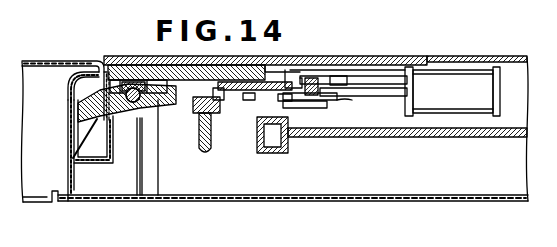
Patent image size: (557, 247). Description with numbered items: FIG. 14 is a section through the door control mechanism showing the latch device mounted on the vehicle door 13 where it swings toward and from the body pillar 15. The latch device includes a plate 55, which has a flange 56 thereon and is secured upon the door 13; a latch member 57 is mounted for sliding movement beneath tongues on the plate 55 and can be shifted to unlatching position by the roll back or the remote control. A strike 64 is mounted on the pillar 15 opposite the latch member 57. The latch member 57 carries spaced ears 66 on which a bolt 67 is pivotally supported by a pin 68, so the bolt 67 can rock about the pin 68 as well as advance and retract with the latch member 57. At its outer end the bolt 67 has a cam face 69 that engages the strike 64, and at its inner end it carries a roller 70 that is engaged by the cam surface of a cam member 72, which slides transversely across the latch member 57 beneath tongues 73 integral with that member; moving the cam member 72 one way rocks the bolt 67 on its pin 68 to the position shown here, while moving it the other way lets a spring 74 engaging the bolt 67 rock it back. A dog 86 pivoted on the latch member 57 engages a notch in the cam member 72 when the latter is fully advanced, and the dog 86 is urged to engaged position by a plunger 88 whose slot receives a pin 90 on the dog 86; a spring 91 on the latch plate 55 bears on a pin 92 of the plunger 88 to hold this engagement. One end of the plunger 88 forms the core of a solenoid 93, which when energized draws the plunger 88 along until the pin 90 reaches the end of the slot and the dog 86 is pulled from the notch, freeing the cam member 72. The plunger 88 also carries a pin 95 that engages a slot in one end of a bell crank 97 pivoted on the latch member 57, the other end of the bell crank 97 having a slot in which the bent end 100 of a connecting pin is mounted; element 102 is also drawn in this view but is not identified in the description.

The door 13 is at (472, 200).
The body pillar 15 is at (40, 188).
The plate 55 is at (373, 60).
The flange 56 is at (116, 147).
The latch member 57 is at (235, 103).
The strike 64 is at (72, 140).
The spaced ears 66 is at (158, 80).
The bolt 67 is at (84, 100).
The pin 68 is at (133, 88).
The cam face 69 is at (71, 116).
The roller 70 is at (196, 112).
The cam member 72 is at (198, 140).
The tongues 73 is at (181, 80).
The spring 74 is at (143, 128).
The dog 86 is at (243, 103).
The plunger 88 is at (320, 103).
The pin 90 is at (258, 135).
The spring 91 is at (314, 82).
The pin 92 is at (297, 78).
The solenoid 93 is at (458, 82).
The pin 95 is at (334, 101).
The bell crank 97 is at (338, 80).
The bent end 100 is at (278, 97).
The lower tube 102 is at (286, 104).